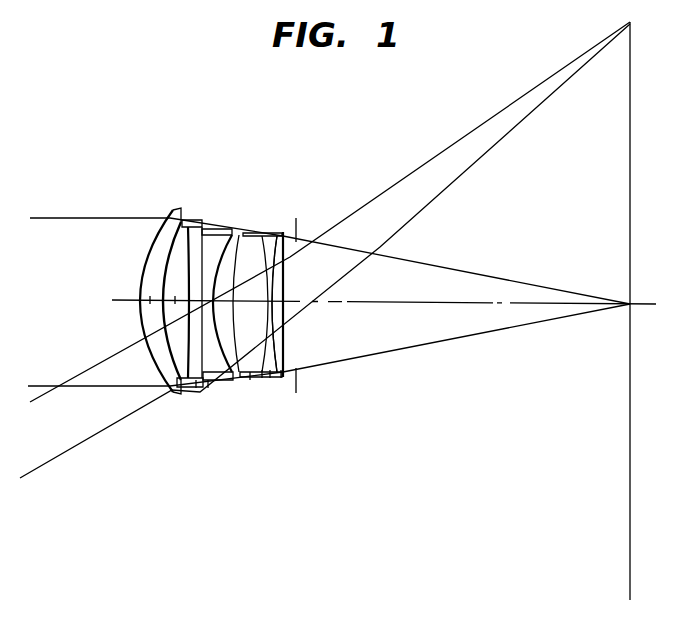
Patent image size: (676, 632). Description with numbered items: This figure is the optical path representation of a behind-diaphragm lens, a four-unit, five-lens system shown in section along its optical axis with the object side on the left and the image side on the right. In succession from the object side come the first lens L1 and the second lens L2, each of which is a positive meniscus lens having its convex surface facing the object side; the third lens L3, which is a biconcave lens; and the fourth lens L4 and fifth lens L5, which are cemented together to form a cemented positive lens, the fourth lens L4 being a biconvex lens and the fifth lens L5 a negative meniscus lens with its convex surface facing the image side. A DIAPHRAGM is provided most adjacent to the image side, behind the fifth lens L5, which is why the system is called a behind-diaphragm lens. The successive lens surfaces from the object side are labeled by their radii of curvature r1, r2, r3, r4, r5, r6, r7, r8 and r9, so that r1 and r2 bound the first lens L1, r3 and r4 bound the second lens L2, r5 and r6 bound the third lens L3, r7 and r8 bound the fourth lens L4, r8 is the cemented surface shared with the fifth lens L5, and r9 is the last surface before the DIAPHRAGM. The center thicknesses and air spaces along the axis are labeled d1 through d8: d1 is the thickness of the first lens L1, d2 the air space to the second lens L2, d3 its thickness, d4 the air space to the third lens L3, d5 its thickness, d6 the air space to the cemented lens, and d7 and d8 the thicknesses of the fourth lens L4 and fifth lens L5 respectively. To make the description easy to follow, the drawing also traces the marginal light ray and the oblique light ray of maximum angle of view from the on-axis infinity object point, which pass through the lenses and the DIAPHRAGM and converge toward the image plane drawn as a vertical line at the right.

The first lens L1 is at (161, 313).
The second lens L2 is at (197, 299).
The third lens L3 is at (234, 299).
The fourth lens L4 is at (276, 299).
The fifth lens L5 is at (331, 313).
The radius of curvature of the first surface r1 is at (171, 211).
The radius of curvature of the second surface r2 is at (176, 270).
The radius of curvature of the third surface r3 is at (189, 226).
The radius of curvature of the fourth surface r4 is at (216, 254).
The radius of curvature of the fifth surface r5 is at (225, 230).
The radius of curvature of the sixth surface r6 is at (250, 251).
The radius of curvature of the seventh surface r7 is at (261, 235).
The radius of curvature of the eighth surface r8 is at (289, 251).
The radius of curvature of the ninth surface r9 is at (302, 268).
The first spacing between lens surfaces d1 is at (150, 300).
The second spacing between lens surfaces d2 is at (163, 313).
The third spacing between lens surfaces d3 is at (196, 386).
The fourth spacing between lens surfaces d4 is at (208, 384).
The fifth spacing between lens surfaces d5 is at (250, 376).
The sixth spacing between lens surfaces d6 is at (262, 374).
The seventh spacing between lens surfaces d7 is at (270, 374).
The eighth spacing between lens surfaces d8 is at (281, 374).
The diaphragm DIAPHRAGM is at (297, 379).